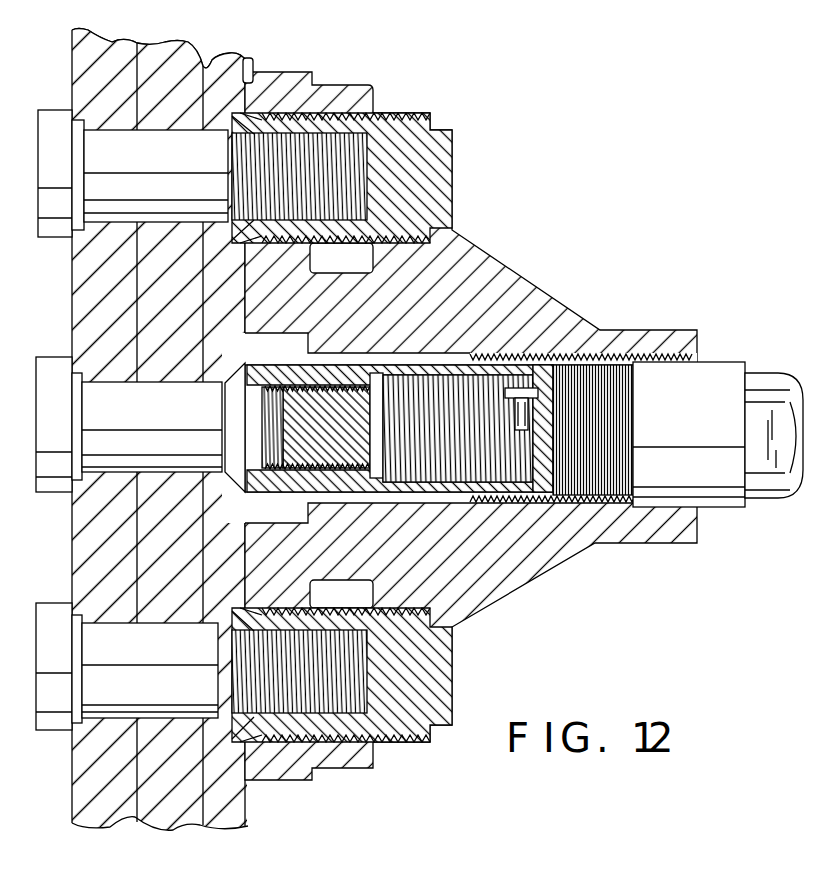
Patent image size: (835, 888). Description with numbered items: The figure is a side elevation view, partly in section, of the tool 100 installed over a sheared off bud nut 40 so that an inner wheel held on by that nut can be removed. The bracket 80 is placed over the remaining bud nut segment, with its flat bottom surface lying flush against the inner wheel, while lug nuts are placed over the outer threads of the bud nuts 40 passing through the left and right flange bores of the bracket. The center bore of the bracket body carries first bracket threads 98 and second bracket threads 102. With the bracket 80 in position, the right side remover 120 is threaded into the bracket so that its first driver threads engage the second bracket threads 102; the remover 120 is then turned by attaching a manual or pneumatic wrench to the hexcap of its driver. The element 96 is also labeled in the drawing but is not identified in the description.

The bud nut 40 is at (452, 143).
The bracket 80 is at (478, 262).
The pin 96 is at (249, 60).
The first bracket threads 98 is at (670, 352).
The tool 100 is at (732, 303).
The second bracket threads 102 is at (553, 362).
The right side remover 120 is at (710, 513).